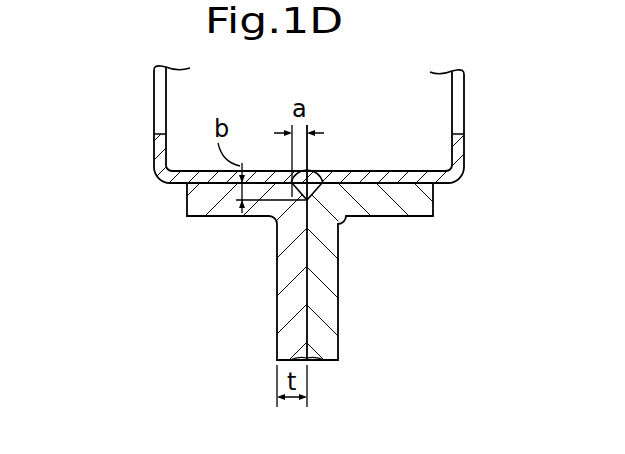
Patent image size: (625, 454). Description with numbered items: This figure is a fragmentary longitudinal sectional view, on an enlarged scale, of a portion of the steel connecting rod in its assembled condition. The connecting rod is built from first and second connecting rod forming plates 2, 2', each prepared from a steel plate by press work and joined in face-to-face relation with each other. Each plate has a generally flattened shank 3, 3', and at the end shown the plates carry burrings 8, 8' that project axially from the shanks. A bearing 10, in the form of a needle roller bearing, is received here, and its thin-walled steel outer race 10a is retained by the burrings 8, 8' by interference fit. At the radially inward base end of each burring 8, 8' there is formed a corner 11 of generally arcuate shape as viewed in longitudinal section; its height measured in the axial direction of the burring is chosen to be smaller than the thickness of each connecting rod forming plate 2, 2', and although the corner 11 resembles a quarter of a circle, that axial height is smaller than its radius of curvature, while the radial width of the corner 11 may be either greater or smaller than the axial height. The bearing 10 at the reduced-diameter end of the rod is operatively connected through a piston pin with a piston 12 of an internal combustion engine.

The bearing 10 is at (146, 113).
The thin-walled steel outer race 10a is at (167, 184).
The burring 8 is at (169, 271).
The burring 8' is at (445, 271).
The first connecting rod forming plate 2 is at (302, 243).
The second connecting rod forming plate 2' is at (311, 271).
The shank 3 is at (341, 281).
The shank 3' is at (276, 281).
The corner 11 is at (304, 184).
The piston 12 is at (276, 221).